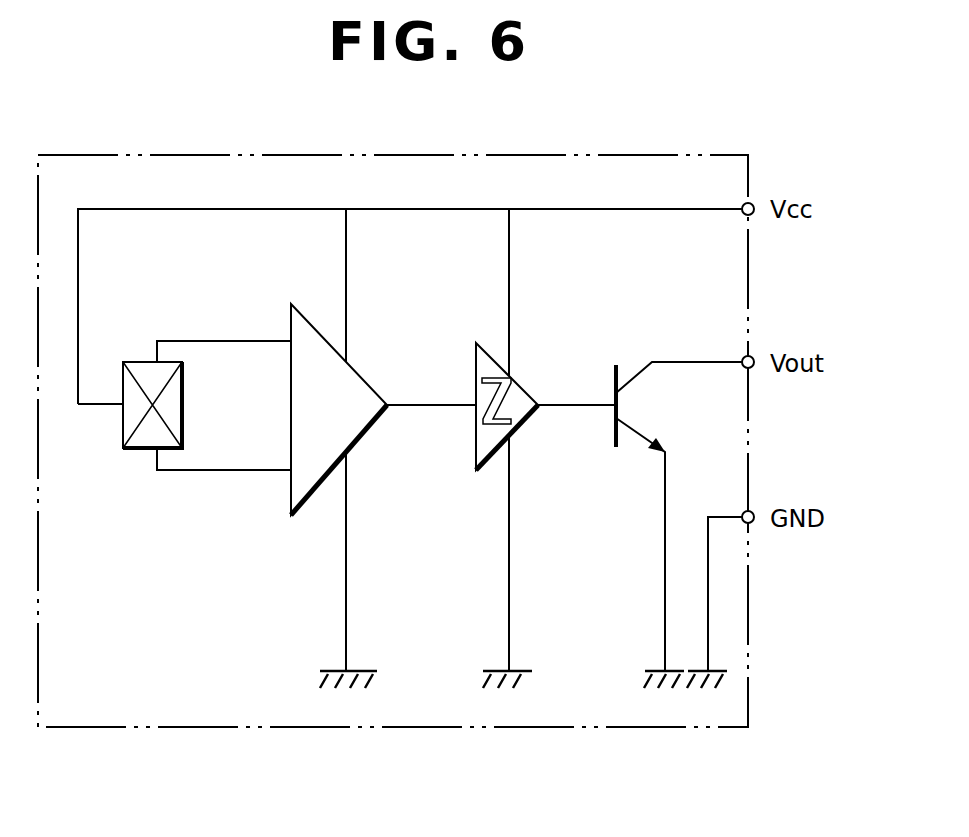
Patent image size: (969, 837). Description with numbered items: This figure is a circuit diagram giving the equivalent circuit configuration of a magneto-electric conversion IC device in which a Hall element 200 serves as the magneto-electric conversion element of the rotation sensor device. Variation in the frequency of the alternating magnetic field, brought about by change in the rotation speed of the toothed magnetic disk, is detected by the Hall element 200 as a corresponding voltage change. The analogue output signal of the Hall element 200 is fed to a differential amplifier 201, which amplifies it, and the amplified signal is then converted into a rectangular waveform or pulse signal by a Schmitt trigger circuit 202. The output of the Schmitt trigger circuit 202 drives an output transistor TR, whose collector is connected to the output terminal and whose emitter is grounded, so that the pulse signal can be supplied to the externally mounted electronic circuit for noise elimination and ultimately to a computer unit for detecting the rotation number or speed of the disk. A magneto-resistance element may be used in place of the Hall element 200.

The Hall element 200 is at (132, 450).
The differential amplifier 201 is at (290, 490).
The Schmitt trigger circuit 202 is at (513, 380).
The output transistor TR is at (610, 425).